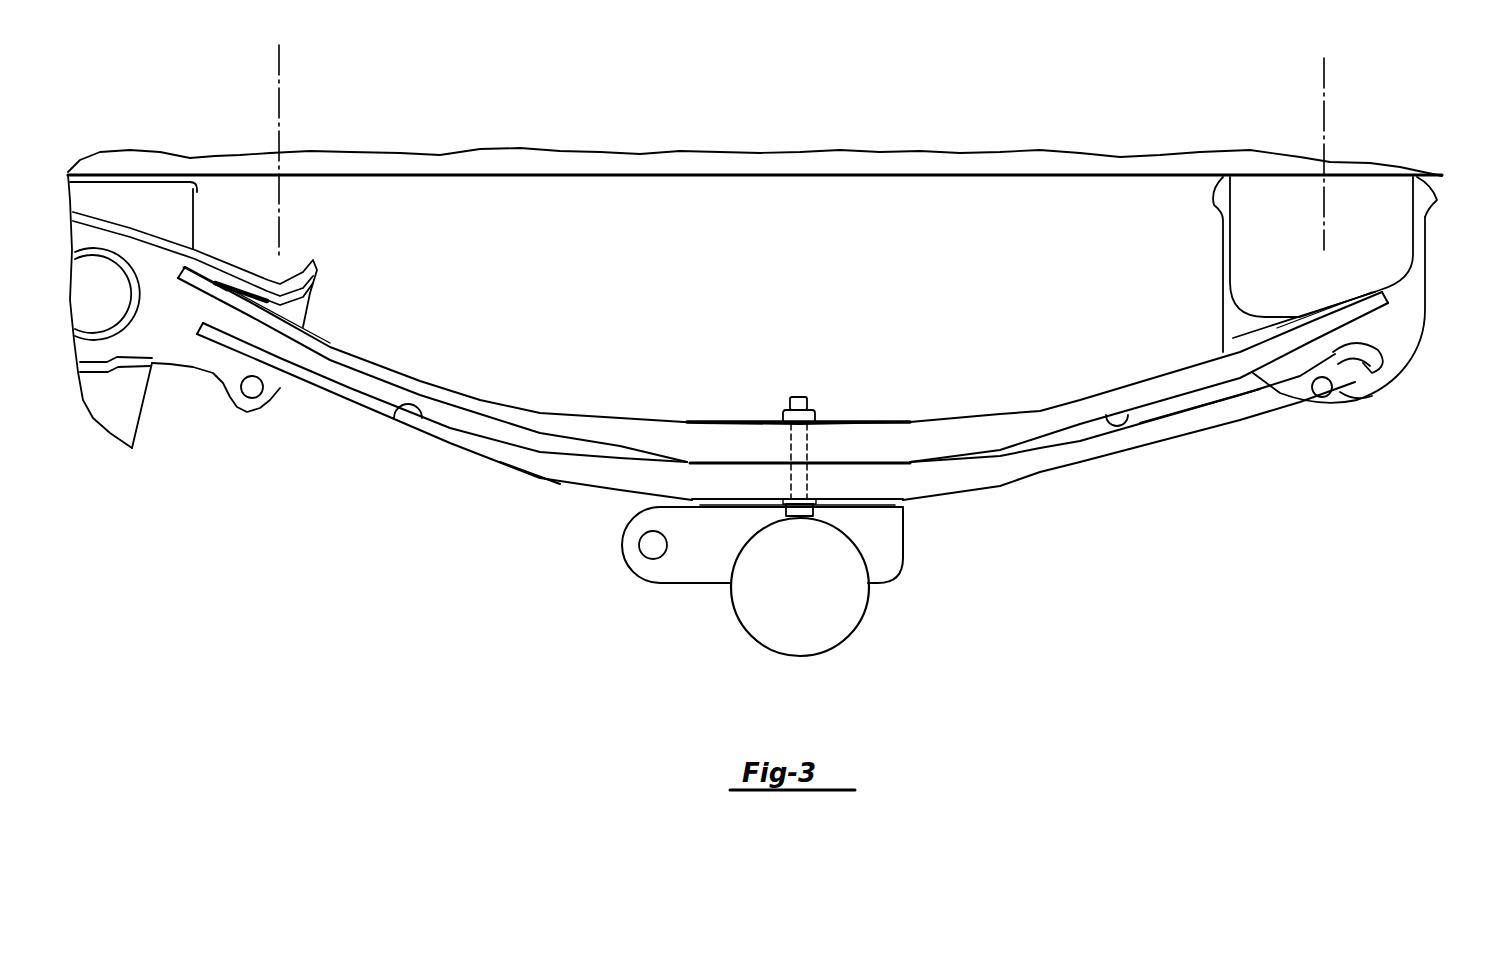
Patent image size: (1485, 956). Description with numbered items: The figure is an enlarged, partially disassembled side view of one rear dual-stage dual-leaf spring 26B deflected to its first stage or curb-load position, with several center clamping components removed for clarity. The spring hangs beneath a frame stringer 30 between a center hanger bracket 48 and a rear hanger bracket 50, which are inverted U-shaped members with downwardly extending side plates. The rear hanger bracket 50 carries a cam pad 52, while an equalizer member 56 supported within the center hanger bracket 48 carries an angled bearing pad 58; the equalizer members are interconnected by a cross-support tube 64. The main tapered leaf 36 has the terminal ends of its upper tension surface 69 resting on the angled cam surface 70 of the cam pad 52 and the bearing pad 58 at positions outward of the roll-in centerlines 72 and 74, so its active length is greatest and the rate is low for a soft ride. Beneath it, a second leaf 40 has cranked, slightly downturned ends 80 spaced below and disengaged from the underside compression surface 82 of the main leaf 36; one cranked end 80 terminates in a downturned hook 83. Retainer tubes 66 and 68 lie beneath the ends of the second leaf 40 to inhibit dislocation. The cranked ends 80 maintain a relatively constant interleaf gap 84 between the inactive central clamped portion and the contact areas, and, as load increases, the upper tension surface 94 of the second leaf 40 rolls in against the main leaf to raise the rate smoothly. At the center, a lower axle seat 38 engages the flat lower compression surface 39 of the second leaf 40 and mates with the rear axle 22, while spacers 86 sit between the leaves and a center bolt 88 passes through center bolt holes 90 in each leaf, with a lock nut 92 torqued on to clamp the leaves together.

The rear axle 22 is at (837, 617).
The rear leaf spring 26B is at (783, 387).
The frame stringer 30 is at (740, 153).
The main leaf 36 is at (927, 422).
The lower axle seat 38 is at (890, 552).
The lower compression surface 39 is at (552, 480).
The second leaf 40 is at (1088, 460).
The center hanger bracket 48 is at (178, 218).
The rear hanger bracket 50 is at (1402, 352).
The cam pad 52 is at (1248, 233).
The equalizer member 56 is at (173, 367).
The bearing pad 58 is at (313, 253).
The cross-support tube 64 is at (135, 315).
The retainer tube 66 is at (1322, 397).
The retainer tube 68 is at (262, 392).
The upper tension surface 69 is at (317, 338).
The angled cam surface 70 is at (313, 305).
The roll-in centerline 72 is at (1322, 92).
The roll-in centerline 74 is at (281, 78).
The cranked end 80 is at (227, 333).
The underside compression surface 82 is at (1112, 418).
The downturned hook 83 is at (1357, 397).
The interleaf gap 84 is at (1170, 407).
The spacer 86 is at (728, 427).
The center bolt 88 is at (797, 408).
The center bolt hole 90 is at (799, 442).
The lock nut 92 is at (778, 420).
The upper tension surface 94 is at (417, 422).